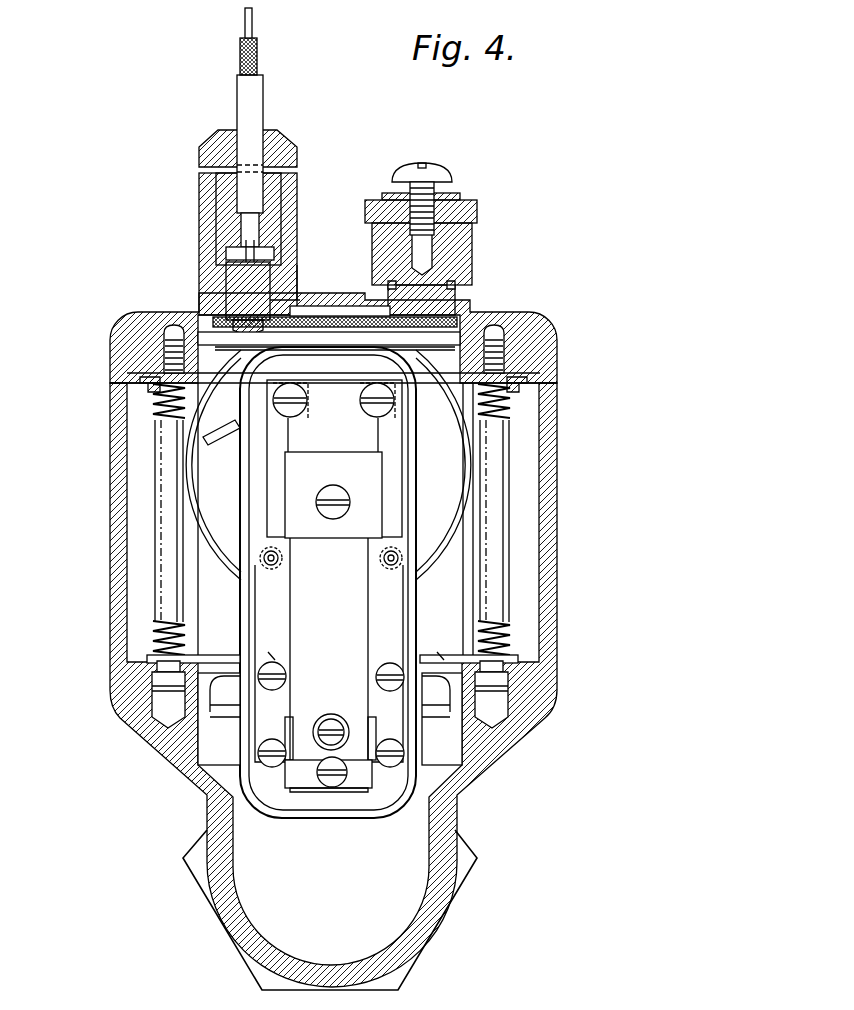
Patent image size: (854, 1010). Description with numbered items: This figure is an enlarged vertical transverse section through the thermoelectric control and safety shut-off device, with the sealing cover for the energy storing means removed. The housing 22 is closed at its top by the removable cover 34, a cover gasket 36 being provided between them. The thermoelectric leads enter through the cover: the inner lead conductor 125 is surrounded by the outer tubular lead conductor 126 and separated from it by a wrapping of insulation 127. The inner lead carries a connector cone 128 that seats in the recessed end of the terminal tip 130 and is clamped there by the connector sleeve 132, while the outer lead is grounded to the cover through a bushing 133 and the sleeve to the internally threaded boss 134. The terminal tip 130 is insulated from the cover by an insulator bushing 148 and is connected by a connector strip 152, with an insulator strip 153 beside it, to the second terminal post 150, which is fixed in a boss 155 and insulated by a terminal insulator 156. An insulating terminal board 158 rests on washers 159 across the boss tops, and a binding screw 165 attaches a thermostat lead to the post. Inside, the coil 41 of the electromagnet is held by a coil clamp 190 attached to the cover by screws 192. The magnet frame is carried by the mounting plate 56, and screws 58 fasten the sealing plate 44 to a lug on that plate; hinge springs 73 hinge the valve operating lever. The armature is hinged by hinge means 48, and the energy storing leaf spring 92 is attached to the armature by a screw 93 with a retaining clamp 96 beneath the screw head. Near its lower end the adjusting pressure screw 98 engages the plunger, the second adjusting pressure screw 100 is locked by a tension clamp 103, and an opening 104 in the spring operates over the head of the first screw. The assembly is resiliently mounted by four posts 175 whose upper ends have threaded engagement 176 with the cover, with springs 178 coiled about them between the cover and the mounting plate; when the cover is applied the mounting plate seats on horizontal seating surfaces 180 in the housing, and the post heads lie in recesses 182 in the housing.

The housing 22 is at (110, 545).
The cover 34 is at (130, 348).
The cover gasket 36 is at (110, 381).
The coil 41 is at (232, 560).
The sealing plate 44 is at (416, 605).
The hinge means 48 is at (286, 440).
The mounting plate 56 is at (212, 655).
The screws 58 is at (275, 670).
The hinge springs 73 is at (213, 722).
The leaf spring 92 is at (298, 616).
The screw 93 is at (338, 494).
The retaining clamp 96 is at (328, 530).
The adjusting pressure screw 98 is at (337, 726).
The second adjusting pressure screw 100 is at (325, 790).
The tension clamp 103 is at (352, 790).
The opening 104 is at (333, 713).
The inner lead conductor 125 is at (244, 18).
The outer tubular lead conductor 126 is at (242, 90).
The insulation 127 is at (262, 55).
The connector cone 128 is at (240, 258).
The terminal tip 130 is at (228, 290).
The connector sleeve 132 is at (210, 153).
The bushing 133 is at (199, 208).
The internally threaded boss 134 is at (297, 203).
The insulator bushing 148 is at (290, 282).
The second terminal post 150 is at (472, 237).
The connector strip 152 is at (330, 345).
The insulator strip 153 is at (315, 318).
The boss 155 is at (456, 265).
The terminal insulator 156 is at (456, 283).
The insulating terminal board 158 is at (478, 212).
The washers 159 is at (440, 193).
The binding screws 165 is at (432, 174).
The screws or posts 175 is at (165, 497).
The threaded engagement 176 is at (166, 350).
The springs 178 is at (160, 640).
The seating surfaces 180 is at (270, 660).
The recesses 182 is at (160, 698).
The coil clamp 190 is at (192, 447).
The screws 192 is at (155, 392).